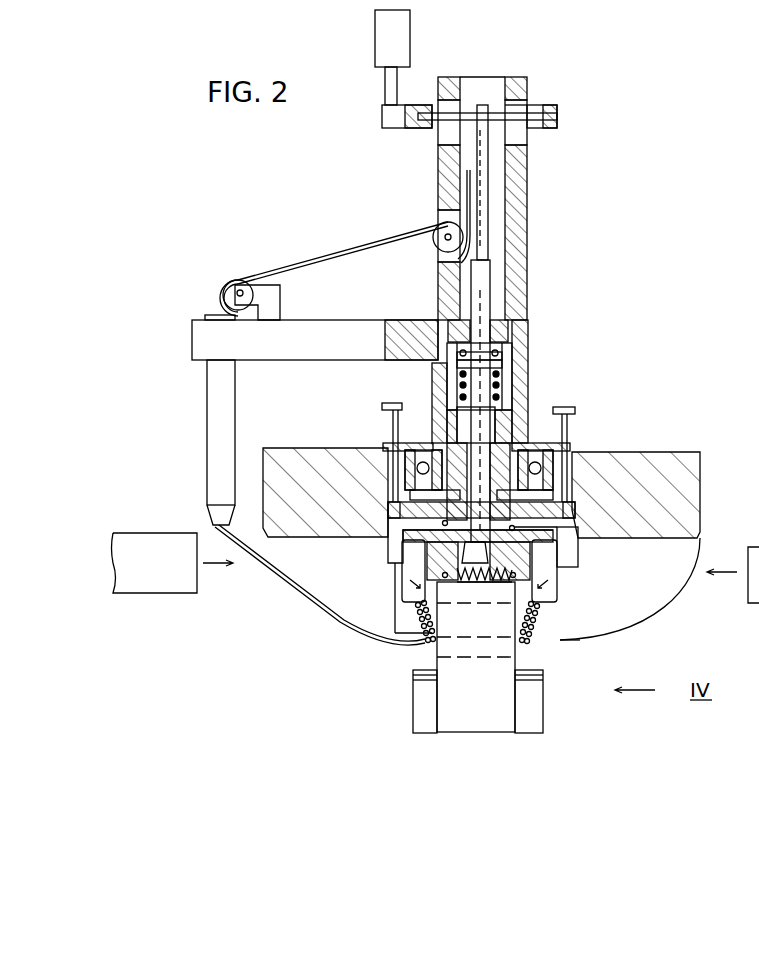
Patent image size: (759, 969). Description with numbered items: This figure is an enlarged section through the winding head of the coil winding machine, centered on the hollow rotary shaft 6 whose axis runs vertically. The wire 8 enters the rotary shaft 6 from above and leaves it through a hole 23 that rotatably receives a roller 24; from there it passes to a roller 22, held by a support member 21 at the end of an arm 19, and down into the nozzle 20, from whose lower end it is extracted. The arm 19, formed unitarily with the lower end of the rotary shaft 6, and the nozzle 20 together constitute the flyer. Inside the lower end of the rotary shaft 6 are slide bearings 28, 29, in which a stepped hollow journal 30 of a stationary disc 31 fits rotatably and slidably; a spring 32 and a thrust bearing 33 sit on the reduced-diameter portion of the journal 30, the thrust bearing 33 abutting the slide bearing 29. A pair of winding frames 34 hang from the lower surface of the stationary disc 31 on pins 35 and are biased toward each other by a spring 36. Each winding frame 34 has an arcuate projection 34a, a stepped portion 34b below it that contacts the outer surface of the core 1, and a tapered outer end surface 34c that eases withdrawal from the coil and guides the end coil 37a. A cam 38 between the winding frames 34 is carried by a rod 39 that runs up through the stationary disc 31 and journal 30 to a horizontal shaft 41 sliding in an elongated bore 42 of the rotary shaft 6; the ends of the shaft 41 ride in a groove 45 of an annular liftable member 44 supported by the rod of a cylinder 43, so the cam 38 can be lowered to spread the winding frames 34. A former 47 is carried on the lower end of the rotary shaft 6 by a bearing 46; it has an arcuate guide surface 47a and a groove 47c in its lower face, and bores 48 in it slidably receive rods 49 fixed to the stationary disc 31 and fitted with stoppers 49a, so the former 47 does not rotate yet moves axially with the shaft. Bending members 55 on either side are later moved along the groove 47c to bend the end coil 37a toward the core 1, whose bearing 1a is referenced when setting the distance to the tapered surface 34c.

The core 1 is at (488, 730).
The bearing of the core 1a is at (413, 690).
The hollow rotary shaft 6 is at (527, 200).
The wire 8 is at (323, 262).
The arm 19 is at (325, 360).
The nozzle 20 is at (207, 408).
The support member 21 is at (280, 295).
The roller 22 is at (228, 290).
The hole 23 is at (438, 217).
The roller 24 is at (433, 237).
The slide bearing 28 is at (445, 423).
The slide bearing 29 is at (508, 330).
The stepped hollow journal 30 is at (500, 417).
The stationary disc 31 is at (388, 510).
The spring 32 is at (504, 388).
The thrust bearing 33 is at (504, 357).
The winding frame 34 is at (405, 595).
The arcuate projection 34a is at (463, 553).
The stepped portion 34b is at (505, 640).
The tapered surface 34c is at (420, 617).
The pin 35 is at (501, 542).
The spring 36 is at (467, 580).
The end coil 37a is at (533, 615).
The cam 38 is at (482, 553).
The rod 39 is at (488, 238).
The horizontal shaft 41 is at (522, 108).
The elongated bore 42 is at (527, 140).
The cylinder 43 is at (410, 30).
The annular liftable member 44 is at (558, 124).
The groove 45 is at (558, 114).
The bearing 46 is at (414, 468).
The former 47 is at (700, 452).
The arcuate guide surface 47a is at (660, 600).
The groove 47c is at (614, 617).
The bore 48 is at (568, 487).
The rod 49 is at (568, 470).
The stopper 49a is at (575, 412).
The bending member 55 is at (182, 593).